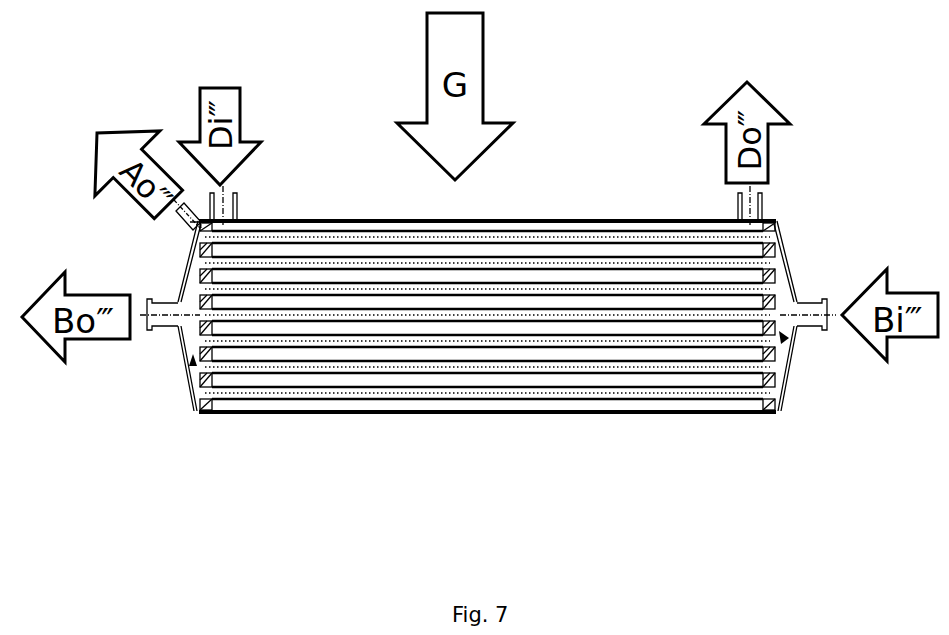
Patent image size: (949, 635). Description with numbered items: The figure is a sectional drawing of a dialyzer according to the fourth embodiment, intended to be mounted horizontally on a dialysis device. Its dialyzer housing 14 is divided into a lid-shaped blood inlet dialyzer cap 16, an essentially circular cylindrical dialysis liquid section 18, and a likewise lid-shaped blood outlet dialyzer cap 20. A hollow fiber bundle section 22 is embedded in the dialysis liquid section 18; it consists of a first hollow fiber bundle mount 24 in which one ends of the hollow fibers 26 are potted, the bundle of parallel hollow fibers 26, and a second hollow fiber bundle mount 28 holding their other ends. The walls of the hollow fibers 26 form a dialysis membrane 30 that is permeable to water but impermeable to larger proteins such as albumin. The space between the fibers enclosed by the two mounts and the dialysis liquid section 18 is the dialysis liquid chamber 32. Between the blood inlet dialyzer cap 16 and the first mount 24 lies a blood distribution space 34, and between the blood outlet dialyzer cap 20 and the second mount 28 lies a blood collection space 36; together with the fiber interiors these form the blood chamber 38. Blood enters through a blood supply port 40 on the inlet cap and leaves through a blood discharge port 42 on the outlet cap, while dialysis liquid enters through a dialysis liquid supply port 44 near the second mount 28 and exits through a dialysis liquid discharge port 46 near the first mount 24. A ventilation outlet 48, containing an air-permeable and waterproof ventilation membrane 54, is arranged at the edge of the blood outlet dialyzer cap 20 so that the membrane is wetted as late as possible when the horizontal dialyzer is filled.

The dialyzer housing 14 is at (515, 415).
The blood inlet dialyzer cap 16 is at (790, 381).
The dialysis liquid section 18 is at (443, 414).
The blood outlet dialyzer cap 20 is at (191, 413).
The hollow fiber bundle section 22 is at (571, 404).
The first hollow fiber bundle mount 24 is at (770, 413).
The hollow fibers 26 is at (725, 401).
The second hollow fiber bundle mount 28 is at (204, 413).
The dialysis membrane 30 is at (536, 403).
The dialysis liquid chamber 32 is at (623, 406).
The blood distribution space 34 is at (783, 339).
The blood collection space 36 is at (193, 362).
The blood chamber 38 is at (420, 396).
The blood supply port 40 is at (817, 302).
The blood discharge port 42 is at (164, 337).
The dialysis liquid supply port 44 is at (238, 205).
The dialysis liquid discharge port 46 is at (762, 205).
The ventilation outlet 48 is at (184, 218).
The ventilation membrane 54 is at (189, 227).